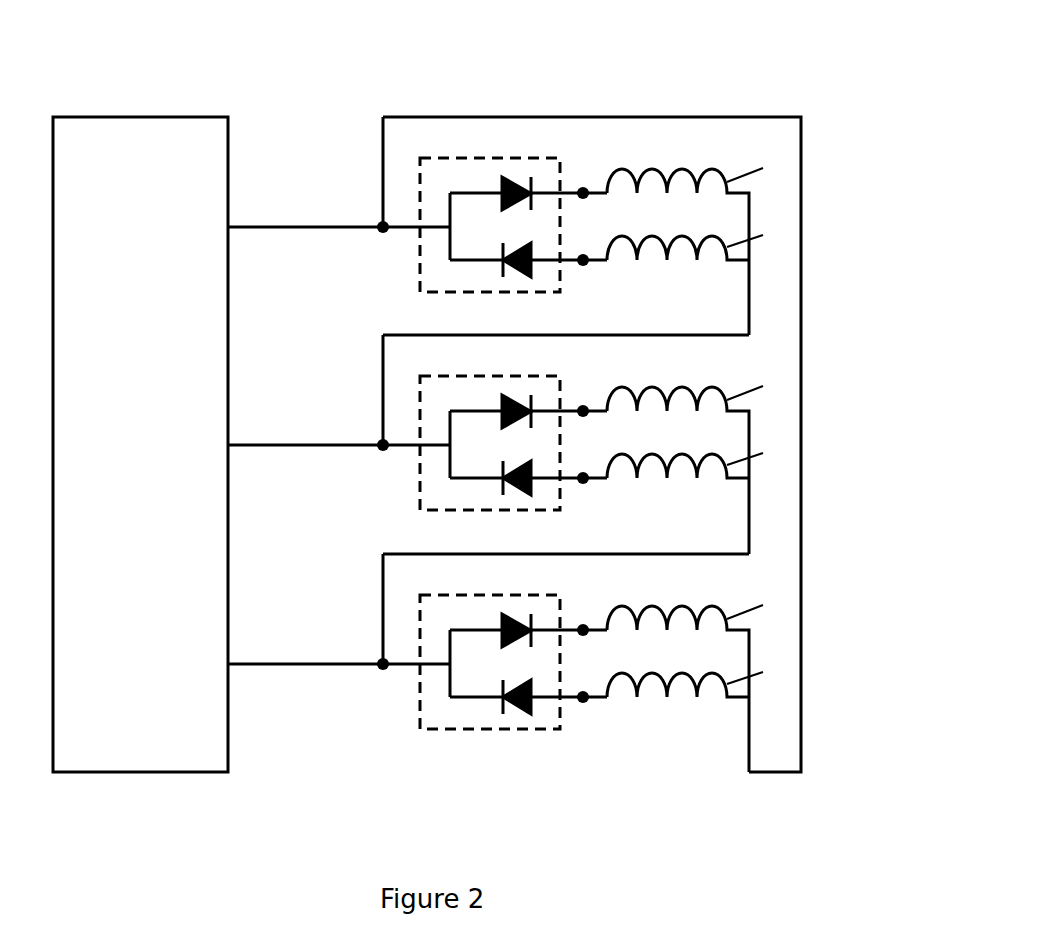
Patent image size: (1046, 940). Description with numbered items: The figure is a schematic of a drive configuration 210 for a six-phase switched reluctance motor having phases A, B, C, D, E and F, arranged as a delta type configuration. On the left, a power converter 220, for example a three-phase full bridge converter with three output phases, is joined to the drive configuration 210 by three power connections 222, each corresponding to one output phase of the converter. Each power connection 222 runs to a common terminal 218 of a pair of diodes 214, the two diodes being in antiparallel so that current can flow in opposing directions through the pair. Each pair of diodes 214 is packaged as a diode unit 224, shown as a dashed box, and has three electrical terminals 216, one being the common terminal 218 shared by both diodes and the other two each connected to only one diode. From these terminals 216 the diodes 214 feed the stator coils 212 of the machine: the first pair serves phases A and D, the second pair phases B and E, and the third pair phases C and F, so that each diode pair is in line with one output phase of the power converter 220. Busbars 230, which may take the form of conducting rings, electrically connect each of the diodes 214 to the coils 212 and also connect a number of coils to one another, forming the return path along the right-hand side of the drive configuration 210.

The drive configuration 210 is at (765, 78).
The coils 212 is at (662, 172).
The diodes 214 is at (503, 188).
The electrical terminals 216 is at (378, 232).
The common terminal 218 is at (380, 225).
The power converter 220 is at (123, 453).
The power connections 222 is at (257, 222).
The diode unit 224 is at (420, 262).
The busbars 230 is at (802, 293).